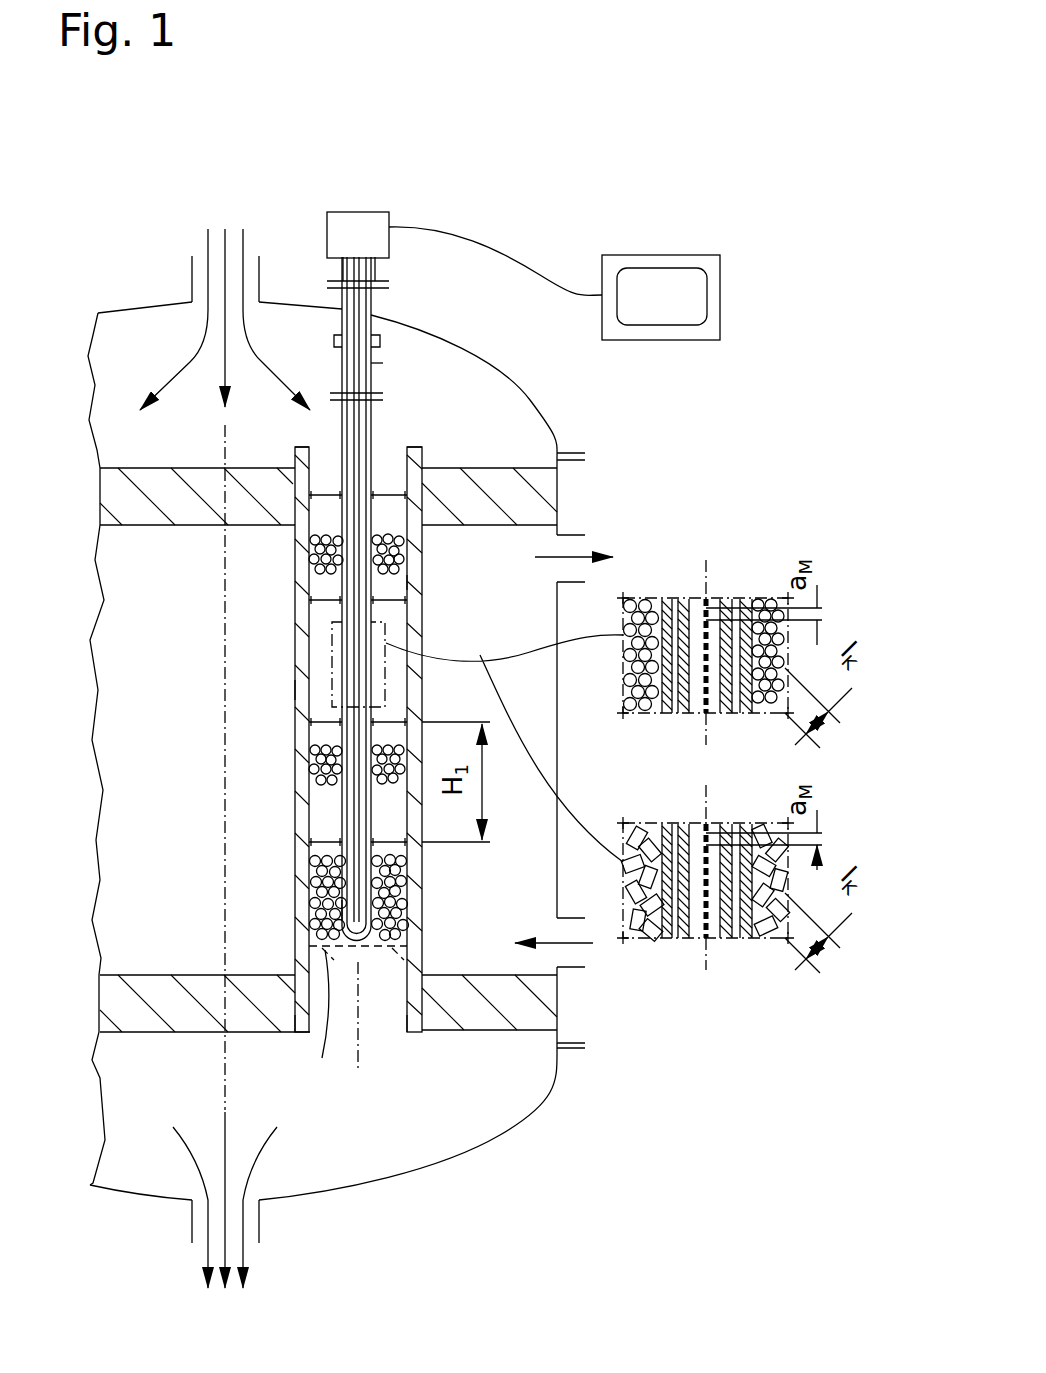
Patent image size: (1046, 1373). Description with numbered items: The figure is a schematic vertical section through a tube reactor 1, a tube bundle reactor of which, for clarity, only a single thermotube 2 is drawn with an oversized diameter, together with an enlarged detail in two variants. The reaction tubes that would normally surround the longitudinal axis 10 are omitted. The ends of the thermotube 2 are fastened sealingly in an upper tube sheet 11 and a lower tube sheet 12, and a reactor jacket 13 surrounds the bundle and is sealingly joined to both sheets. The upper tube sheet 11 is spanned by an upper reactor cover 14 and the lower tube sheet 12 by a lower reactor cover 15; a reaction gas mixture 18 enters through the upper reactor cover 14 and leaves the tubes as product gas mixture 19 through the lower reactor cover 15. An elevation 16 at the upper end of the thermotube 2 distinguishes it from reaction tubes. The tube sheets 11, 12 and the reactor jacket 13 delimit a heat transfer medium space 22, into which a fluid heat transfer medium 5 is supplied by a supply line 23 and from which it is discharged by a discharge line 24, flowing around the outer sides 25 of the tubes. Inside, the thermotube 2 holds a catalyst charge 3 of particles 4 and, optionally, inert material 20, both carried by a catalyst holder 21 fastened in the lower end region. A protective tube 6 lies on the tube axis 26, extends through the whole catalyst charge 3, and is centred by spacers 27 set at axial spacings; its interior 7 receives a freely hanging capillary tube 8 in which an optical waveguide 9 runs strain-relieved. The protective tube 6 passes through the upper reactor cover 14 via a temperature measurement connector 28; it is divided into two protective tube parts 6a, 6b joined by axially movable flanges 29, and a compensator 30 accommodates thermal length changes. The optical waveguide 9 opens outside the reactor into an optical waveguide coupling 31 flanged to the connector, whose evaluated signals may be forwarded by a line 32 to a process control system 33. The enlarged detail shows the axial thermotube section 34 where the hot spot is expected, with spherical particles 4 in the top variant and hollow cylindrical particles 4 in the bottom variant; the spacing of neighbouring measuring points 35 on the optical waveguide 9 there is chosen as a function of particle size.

The tube reactor 1 is at (505, 160).
The thermotube 2 is at (290, 662).
The catalyst charge 3 is at (318, 584).
The particles 4 is at (310, 540).
The fluid heat transfer medium 5 is at (565, 557).
The protective tube 6 is at (376, 426).
The protective tube part 6a is at (340, 413).
The protective tube part 6b is at (384, 365).
The interior 7 is at (678, 823).
The capillary tube 8 is at (726, 823).
The optical waveguide 9 is at (708, 823).
The longitudinal axis 10 is at (225, 778).
The upper tube sheet 11 is at (557, 483).
The lower tube sheet 12 is at (470, 1018).
The reactor jacket 13 is at (557, 728).
The upper reactor cover 14 is at (535, 387).
The lower reactor cover 15 is at (475, 1152).
The elevation 16 is at (422, 452).
The reaction gas mixture 18 is at (233, 237).
The product gas mixture 19 is at (243, 1255).
The inert material 20 is at (400, 918).
The catalyst holder 21 is at (318, 1018).
The heat transfer medium space 22 is at (155, 852).
The supply line 23 is at (572, 967).
The discharge line 24 is at (572, 528).
The outer sides 25 is at (293, 692).
The tube axis 26 is at (357, 1037).
The spacers 27 is at (408, 583).
The temperature measurement connector 28 is at (371, 310).
The flanges 29 is at (384, 393).
The compensator 30 is at (336, 343).
The optical waveguide coupling 31 is at (348, 212).
The line 32 is at (535, 272).
The process control system 33 is at (657, 255).
The axial thermotube section 34 is at (388, 640).
The measuring points 35 is at (710, 598).